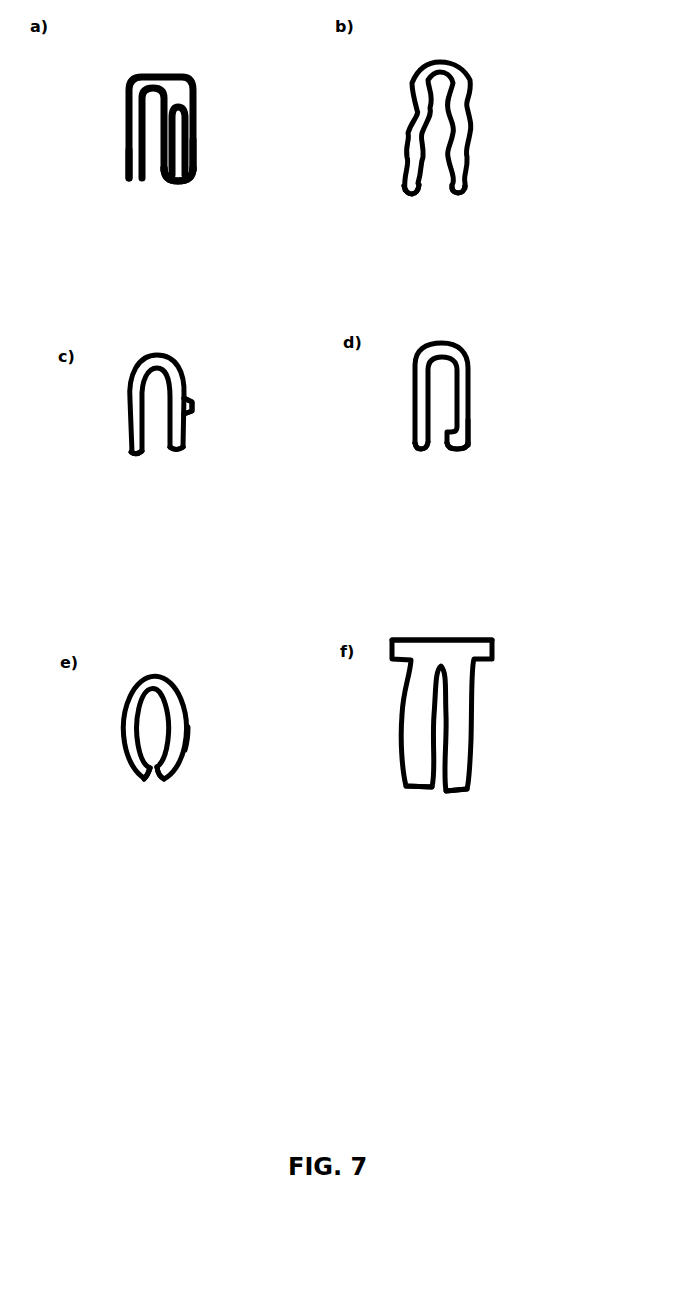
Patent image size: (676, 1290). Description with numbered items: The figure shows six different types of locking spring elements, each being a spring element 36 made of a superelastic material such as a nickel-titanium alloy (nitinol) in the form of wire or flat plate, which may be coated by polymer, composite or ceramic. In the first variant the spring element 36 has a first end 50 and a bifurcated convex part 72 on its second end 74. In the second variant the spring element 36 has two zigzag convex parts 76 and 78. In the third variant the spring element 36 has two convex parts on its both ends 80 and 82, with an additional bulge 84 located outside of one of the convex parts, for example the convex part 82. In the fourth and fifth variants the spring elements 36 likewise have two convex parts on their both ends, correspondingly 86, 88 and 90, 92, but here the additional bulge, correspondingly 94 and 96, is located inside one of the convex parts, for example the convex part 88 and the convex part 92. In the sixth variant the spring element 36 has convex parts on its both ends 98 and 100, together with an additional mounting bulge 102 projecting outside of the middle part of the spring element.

The spring element 36 is at (182, 80).
The first end 50 is at (130, 173).
The bifurcated convex part 72 is at (187, 183).
The second end 74 is at (202, 160).
The zigzag convex part 76 is at (410, 192).
The zigzag convex part 78 is at (470, 182).
The end 80 is at (133, 453).
The end 82 is at (178, 452).
The additional bulge 84 is at (195, 414).
The end 86 is at (415, 428).
The end 88 is at (470, 433).
The additional bulge 94 is at (450, 447).
The end 90 is at (123, 777).
The end 92 is at (188, 743).
The additional bulge 96 is at (152, 777).
The end 98 is at (413, 792).
The end 100 is at (453, 792).
The additional mounting bulge 102 is at (460, 647).